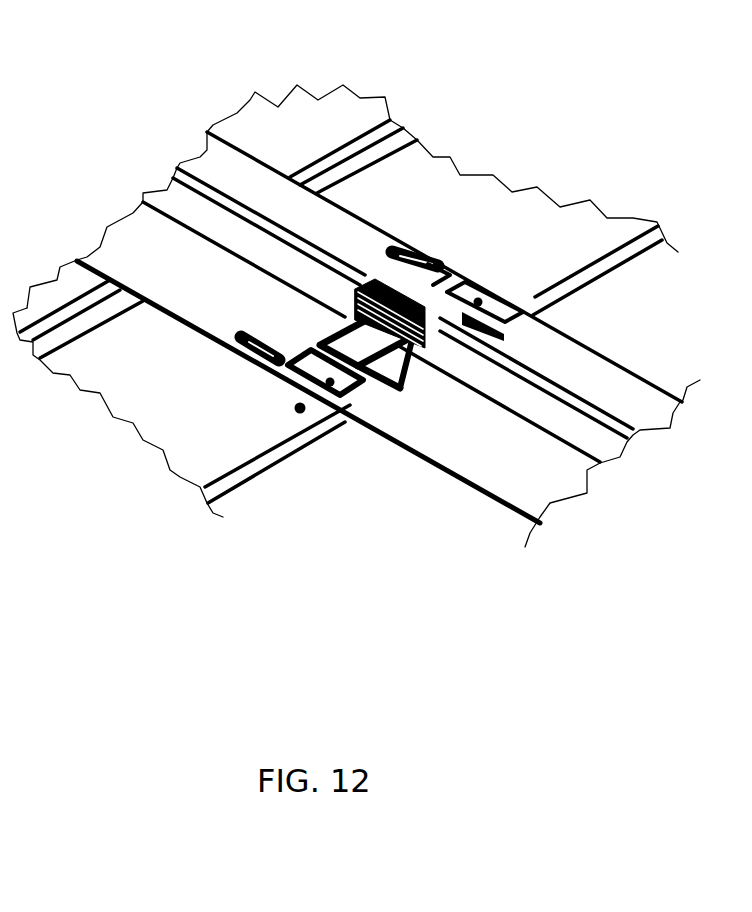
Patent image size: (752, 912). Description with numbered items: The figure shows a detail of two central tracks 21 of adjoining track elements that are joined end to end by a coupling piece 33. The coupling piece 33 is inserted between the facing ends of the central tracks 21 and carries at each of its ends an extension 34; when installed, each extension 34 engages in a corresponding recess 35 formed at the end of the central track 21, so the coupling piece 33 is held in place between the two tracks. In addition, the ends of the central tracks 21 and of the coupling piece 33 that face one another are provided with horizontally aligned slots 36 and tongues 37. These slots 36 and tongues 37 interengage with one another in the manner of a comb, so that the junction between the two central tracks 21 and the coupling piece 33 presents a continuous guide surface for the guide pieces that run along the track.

The central track 21 is at (528, 400).
The coupling piece 33 is at (258, 190).
The extension 34 is at (340, 367).
The recess 35 is at (377, 385).
The slot 36 is at (418, 318).
The tongue 37 is at (400, 280).